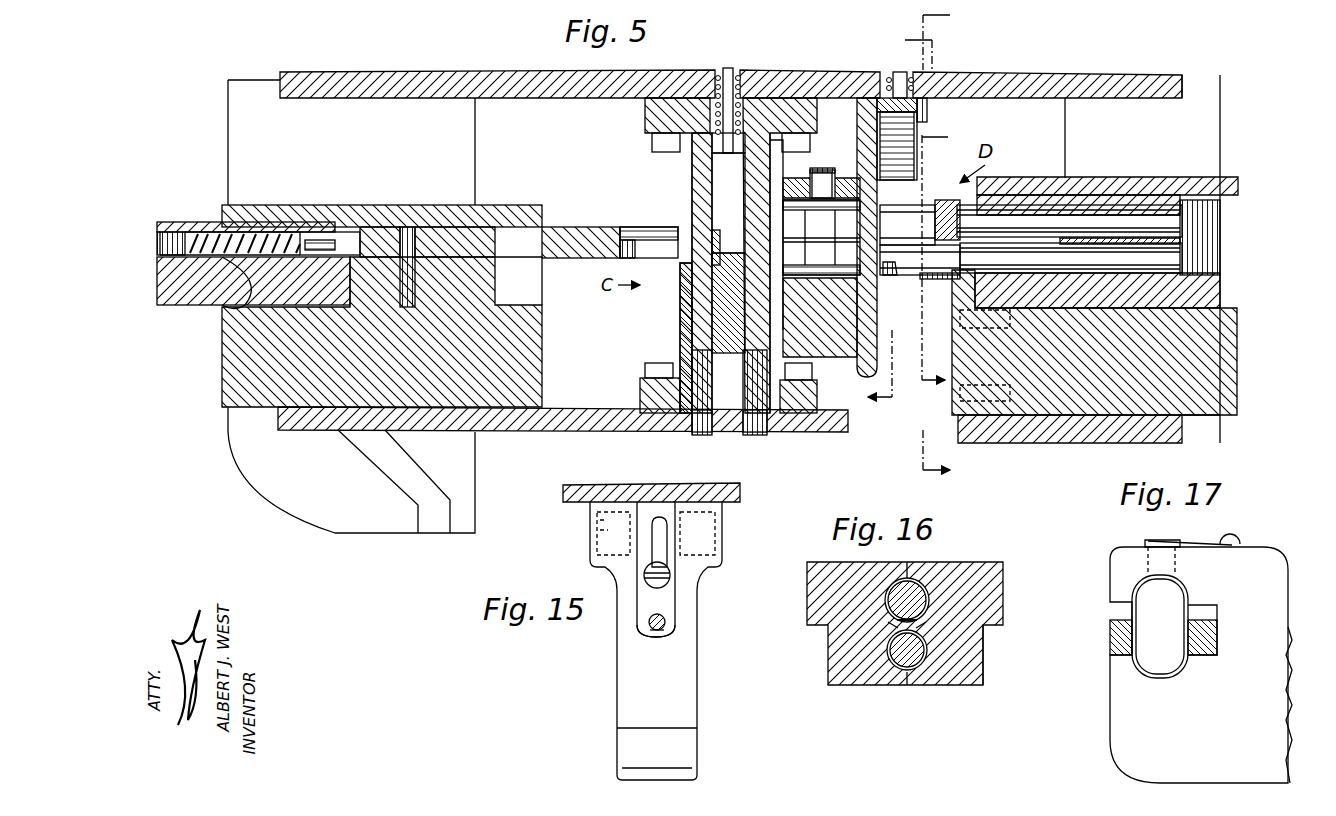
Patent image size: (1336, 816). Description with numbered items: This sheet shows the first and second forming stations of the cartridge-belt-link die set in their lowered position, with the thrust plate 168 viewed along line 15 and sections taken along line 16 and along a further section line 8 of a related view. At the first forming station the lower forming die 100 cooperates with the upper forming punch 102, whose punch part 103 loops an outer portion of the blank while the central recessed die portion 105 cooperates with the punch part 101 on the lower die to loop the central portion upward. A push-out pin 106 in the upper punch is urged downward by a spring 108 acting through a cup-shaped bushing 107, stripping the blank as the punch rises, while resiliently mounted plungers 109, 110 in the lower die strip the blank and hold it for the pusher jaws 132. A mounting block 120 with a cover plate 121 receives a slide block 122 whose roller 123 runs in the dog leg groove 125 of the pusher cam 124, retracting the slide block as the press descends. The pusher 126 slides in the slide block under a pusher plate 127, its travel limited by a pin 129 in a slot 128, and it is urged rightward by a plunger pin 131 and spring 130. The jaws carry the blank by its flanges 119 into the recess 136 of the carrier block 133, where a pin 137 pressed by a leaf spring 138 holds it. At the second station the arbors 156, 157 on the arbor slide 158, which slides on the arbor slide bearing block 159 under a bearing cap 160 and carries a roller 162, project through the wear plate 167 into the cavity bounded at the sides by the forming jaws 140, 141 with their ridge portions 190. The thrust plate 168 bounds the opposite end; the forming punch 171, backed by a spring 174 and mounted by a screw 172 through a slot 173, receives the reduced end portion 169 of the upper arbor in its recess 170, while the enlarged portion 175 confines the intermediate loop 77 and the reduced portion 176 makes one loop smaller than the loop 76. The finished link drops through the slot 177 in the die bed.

In FIG. 5, the pusher cam 124 is at (470, 131).
In FIG. 5, the cover plate 121 is at (258, 205).
In FIG. 5, the spring 130 is at (196, 222).
In FIG. 5, the plunger pin 131 is at (335, 230).
In FIG. 5, the pusher plate 127 is at (383, 230).
In FIG. 5, the pin 129 is at (408, 230).
In FIG. 5, the slot 128 is at (432, 230).
In FIG. 5, the slide block 122 is at (253, 299).
In FIG. 5, the roller 123 is at (222, 319).
In FIG. 5, the mounting block 120 is at (544, 362).
In FIG. 5, the slot 177 is at (852, 432).
In FIG. 5, the dog leg groove 125 is at (390, 497).
In FIG. 5, the upper forming punch 102 is at (690, 184).
In FIG. 5, the punch part 103 is at (680, 326).
In FIG. 5, the push-out pin 106 is at (722, 164).
In FIG. 5, the spring 108 is at (736, 72).
In FIG. 5, the cup-shaped bushing 107 is at (758, 98).
In FIG. 5, the punch part 101 is at (713, 278).
In FIG. 5, the central recessed die portion 105 is at (712, 235).
In FIG. 5, the lower forming die 100 is at (640, 391).
In FIG. 5, the plunger 109 is at (700, 436).
In FIG. 5, the plunger 110 is at (760, 436).
In FIG. 5, the pusher 126 is at (574, 226).
In FIG. 5, the pusher jaws 132 is at (640, 228).
In FIG. 17, the pusher jaws 132 is at (1112, 640).
In FIG. 5, the carrier block 133 is at (774, 273).
In FIG. 17, the carrier block 133 is at (1130, 686).
In FIG. 5, the pin 137 is at (836, 178).
In FIG. 17, the pin 137 is at (1147, 560).
In FIG. 5, the leaf spring 138 is at (820, 168).
In FIG. 17, the leaf spring 138 is at (1225, 540).
In FIG. 5, the flanges 119 is at (821, 278).
In FIG. 17, the flanges 119 is at (1130, 615).
In FIG. 5, the thrust plate 168 is at (862, 372).
In FIG. 15, the thrust plate 168 is at (685, 750).
In FIG. 5, the screw 172 is at (893, 170).
In FIG. 15, the screw 172 is at (668, 580).
In FIG. 5, the spring 174 is at (892, 74).
In FIG. 5, the slot 173 is at (925, 115).
In FIG. 15, the slot 173 is at (662, 530).
In FIG. 5, the section line 8 is at (944, 245).
In FIG. 5, the line 15— 15 is at (885, 219).
In FIG. 5, the line 16— 16 is at (946, 266).
In FIG. 5, the wear plate 167 is at (980, 188).
In FIG. 5, the roller 162 is at (1135, 205).
In FIG. 5, the bearing cap 160 is at (1222, 180).
In FIG. 5, the arbor 156 is at (1069, 221).
In FIG. 5, the arbor 157 is at (1071, 258).
In FIG. 16, the arbor 157 is at (912, 660).
In FIG. 5, the reduced end portion 169 is at (942, 220).
In FIG. 15, the reduced end portion 169 is at (665, 620).
In FIG. 5, the intermediate loop 77 is at (920, 203).
In FIG. 16, the intermediate loop 77 is at (925, 580).
In FIG. 5, the enlarged portion 175 is at (918, 275).
In FIG. 16, the enlarged portion 175 is at (925, 600).
In FIG. 5, the reduced portion 176 is at (894, 278).
In FIG. 5, the loop 76 is at (940, 282).
In FIG. 5, the arbor slide 158 is at (1222, 284).
In FIG. 5, the arbor slide bearing block 159 is at (1222, 348).
In FIG. 15, the forming punch 171 is at (676, 634).
In FIG. 15, the recess 170 is at (656, 636).
In FIG. 16, the forming jaw 140 is at (840, 664).
In FIG. 16, the ridge portions 190 is at (890, 626).
In FIG. 16, the forming jaw 141 is at (985, 683).
In FIG. 17, the recess 136 is at (1200, 610).